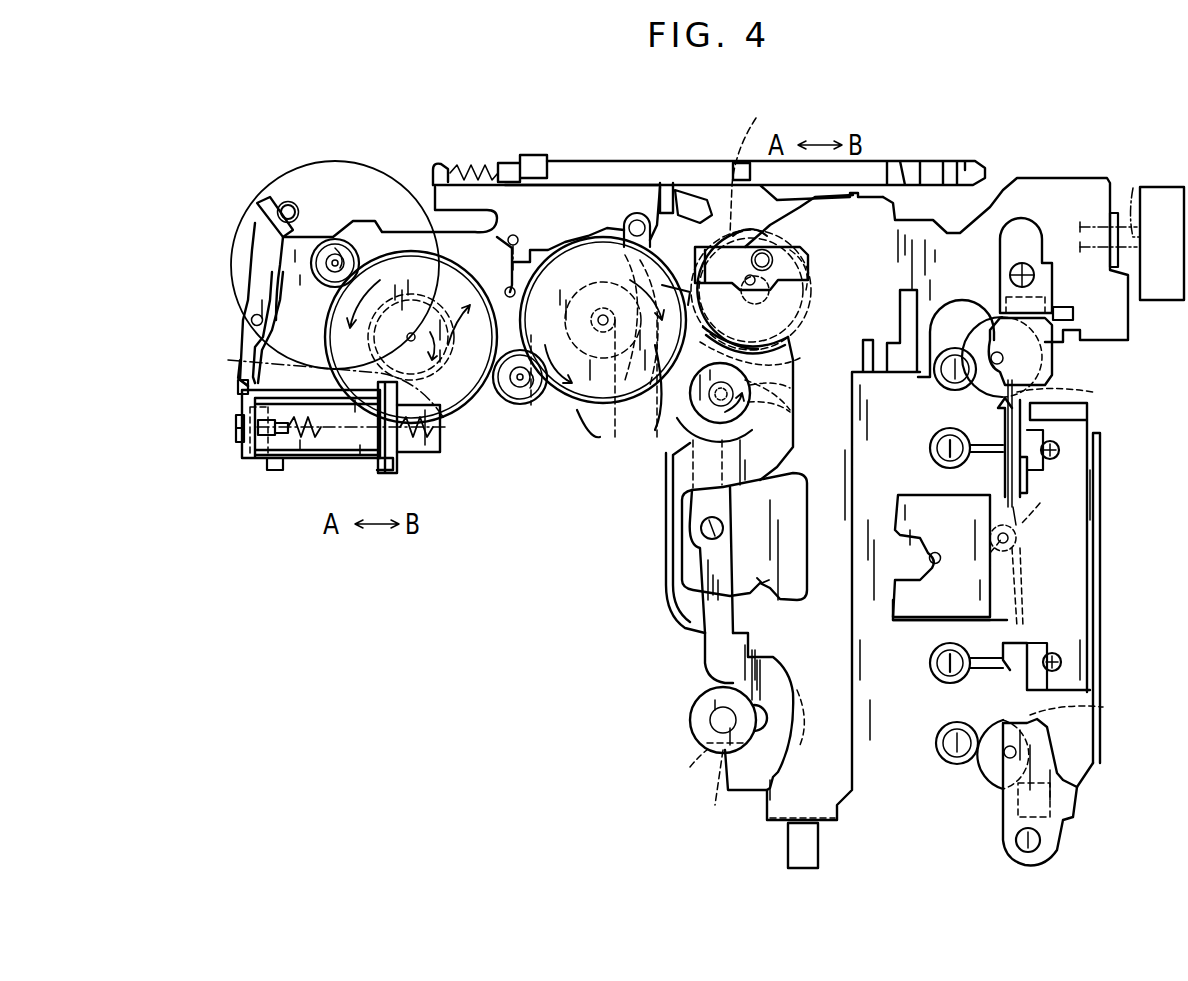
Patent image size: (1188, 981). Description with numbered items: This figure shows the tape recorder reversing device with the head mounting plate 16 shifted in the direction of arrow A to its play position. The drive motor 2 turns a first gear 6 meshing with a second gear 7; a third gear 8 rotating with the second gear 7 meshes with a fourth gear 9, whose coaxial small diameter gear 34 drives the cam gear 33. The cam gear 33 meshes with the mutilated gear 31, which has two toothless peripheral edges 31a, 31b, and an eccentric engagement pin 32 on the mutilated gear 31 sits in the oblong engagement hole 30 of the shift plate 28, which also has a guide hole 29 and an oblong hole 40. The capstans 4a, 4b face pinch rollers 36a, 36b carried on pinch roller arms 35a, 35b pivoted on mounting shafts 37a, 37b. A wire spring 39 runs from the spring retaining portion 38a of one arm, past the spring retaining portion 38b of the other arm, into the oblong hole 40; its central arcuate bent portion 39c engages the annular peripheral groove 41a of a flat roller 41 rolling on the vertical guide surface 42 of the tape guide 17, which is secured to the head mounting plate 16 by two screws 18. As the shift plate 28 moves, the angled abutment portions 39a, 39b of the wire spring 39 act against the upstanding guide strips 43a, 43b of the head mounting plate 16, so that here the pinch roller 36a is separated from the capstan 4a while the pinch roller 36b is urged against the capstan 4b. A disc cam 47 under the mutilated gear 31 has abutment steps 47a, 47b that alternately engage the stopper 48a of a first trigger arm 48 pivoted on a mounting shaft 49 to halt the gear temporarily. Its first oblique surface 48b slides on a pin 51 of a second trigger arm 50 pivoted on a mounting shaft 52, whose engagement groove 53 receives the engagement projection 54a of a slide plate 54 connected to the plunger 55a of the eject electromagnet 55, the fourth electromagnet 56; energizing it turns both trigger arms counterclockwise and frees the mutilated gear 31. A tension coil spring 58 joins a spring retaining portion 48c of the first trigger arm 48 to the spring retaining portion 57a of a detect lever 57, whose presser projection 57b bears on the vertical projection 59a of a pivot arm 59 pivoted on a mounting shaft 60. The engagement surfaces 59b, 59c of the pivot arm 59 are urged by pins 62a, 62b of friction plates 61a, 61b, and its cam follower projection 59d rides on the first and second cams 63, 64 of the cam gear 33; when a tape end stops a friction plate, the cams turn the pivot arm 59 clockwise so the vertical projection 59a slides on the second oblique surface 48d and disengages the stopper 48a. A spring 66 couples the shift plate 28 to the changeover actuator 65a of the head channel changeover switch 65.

The drive motor 2 is at (232, 240).
The capstan 4a is at (952, 762).
The capstan 4b is at (960, 358).
The first gear 6 is at (316, 262).
The second gear 7 is at (325, 333).
The third gear 8 is at (375, 341).
The fourth gear 9 is at (470, 421).
The head mounting plate 16 is at (893, 622).
The tape guide 17 is at (1102, 565).
The screws 18 is at (1062, 450).
The shift plate 28 is at (860, 727).
The guide hole 29 is at (762, 583).
The engagement hole 30 is at (757, 297).
The mutilated gear 31 is at (790, 340).
The peripheral edge 31a is at (667, 285).
The peripheral edge 31b is at (808, 270).
The engagement pin 32 is at (790, 243).
The cam gear 33 is at (577, 400).
The small diameter gear 34 is at (512, 405).
The pinch roller arm 35a is at (1057, 743).
The pinch roller arm 35b is at (1052, 350).
The pinch roller 36a is at (990, 780).
The pinch roller 36b is at (990, 378).
The mounting shaft 37a is at (1018, 844).
The mounting shaft 37b is at (1008, 276).
The spring retaining portion 38a is at (1093, 703).
The spring retaining portion 38b is at (1077, 387).
The wire spring 39 is at (990, 515).
The angled abutment portion 39a is at (955, 685).
The angled abutment portion 39b is at (935, 446).
The central arcuate bent portion 39c is at (1018, 540).
The oblong hole 40 is at (1065, 310).
The flat roller 41 is at (1041, 499).
The annular peripheral groove 41a is at (990, 553).
The vertical guide surface 42 is at (1022, 560).
The guide strip 43a is at (1003, 675).
The guide strip 43b is at (1002, 428).
The disc cam 47 is at (800, 292).
The abutment step 47a is at (756, 161).
The abutment step 47b is at (785, 363).
The first trigger arm 48 is at (600, 184).
The stopper 48a is at (755, 233).
The first oblique surface 48b is at (287, 205).
The hook end 48c is at (437, 165).
The second oblique surface 48d is at (693, 195).
The mounting shaft 49 is at (513, 234).
The second trigger arm 50 is at (253, 252).
The pin 51 is at (298, 212).
The mounting shaft 52 is at (250, 320).
The engagement groove 53 is at (238, 367).
The slide plate 54 is at (302, 455).
The engagement projection 54a is at (238, 392).
The flange 55 is at (382, 465).
The plunger 55a is at (236, 432).
The fourth electromagnet 56 is at (407, 452).
The detect lever 57 is at (612, 161).
The spring retaining portion 57a is at (526, 160).
The presser projection 57b is at (665, 185).
The tension coil spring 58 is at (472, 170).
The pivot arm 59 is at (732, 570).
The vertical projection 59a is at (632, 222).
The engagement surface 59b is at (715, 795).
The engagement surface 59c is at (768, 408).
The cam follower projection 59d is at (603, 405).
The mounting shaft 60 is at (725, 525).
The friction plate 61a is at (690, 720).
The friction plate 61b is at (738, 418).
The pin 62a is at (690, 767).
The pin 62b is at (788, 389).
The first cam 63 is at (590, 312).
The second cam 64 is at (660, 395).
The head channel changeover switch 65 is at (1150, 302).
The changeover actuator 65a is at (1132, 185).
The spring 66 is at (1085, 227).